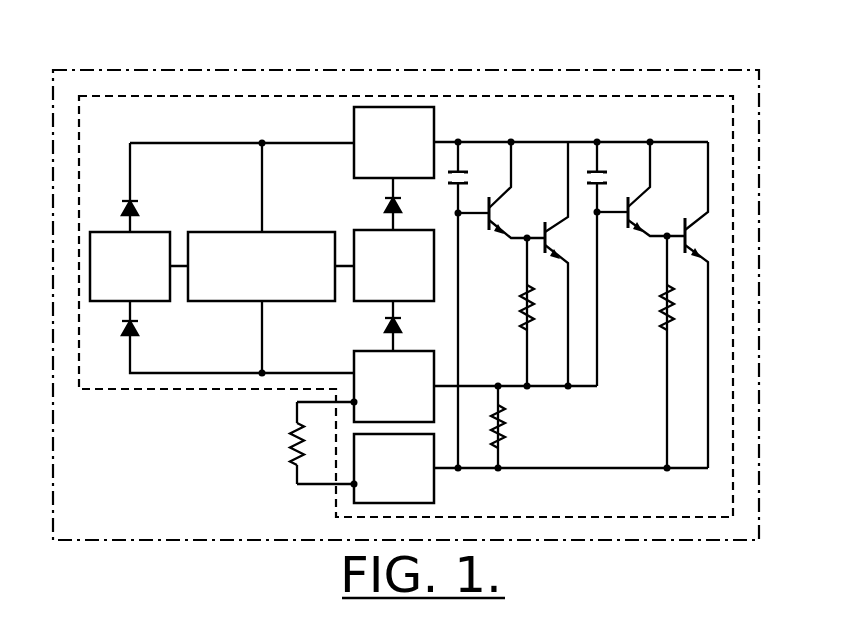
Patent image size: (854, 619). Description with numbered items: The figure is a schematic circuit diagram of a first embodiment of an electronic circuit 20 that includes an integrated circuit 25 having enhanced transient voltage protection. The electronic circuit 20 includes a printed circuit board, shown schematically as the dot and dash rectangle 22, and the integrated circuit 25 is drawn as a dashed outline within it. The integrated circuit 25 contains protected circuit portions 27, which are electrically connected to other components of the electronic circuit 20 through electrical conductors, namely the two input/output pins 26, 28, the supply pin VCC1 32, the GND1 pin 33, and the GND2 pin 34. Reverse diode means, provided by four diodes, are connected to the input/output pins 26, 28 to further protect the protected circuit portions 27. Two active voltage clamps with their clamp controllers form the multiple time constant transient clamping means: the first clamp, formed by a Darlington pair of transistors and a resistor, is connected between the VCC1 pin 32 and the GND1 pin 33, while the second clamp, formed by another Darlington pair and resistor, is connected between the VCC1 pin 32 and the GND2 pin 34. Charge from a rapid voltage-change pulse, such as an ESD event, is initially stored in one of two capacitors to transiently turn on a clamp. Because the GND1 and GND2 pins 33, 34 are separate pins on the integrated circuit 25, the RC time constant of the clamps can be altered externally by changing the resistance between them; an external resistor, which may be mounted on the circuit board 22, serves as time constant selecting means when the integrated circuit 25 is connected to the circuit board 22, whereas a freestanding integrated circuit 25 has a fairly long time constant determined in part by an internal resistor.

The electronic circuit 20 is at (640, 38).
The printed circuit board 22 is at (410, 70).
The integrated circuit 25 is at (472, 88).
The input/output pin 26 is at (354, 304).
The protected circuit portions 27 is at (277, 232).
The input/output pin 28 is at (158, 232).
The supply pin VCC1 32 is at (354, 140).
The GND1 pin 33 is at (354, 357).
The GND2 pin 34 is at (435, 489).